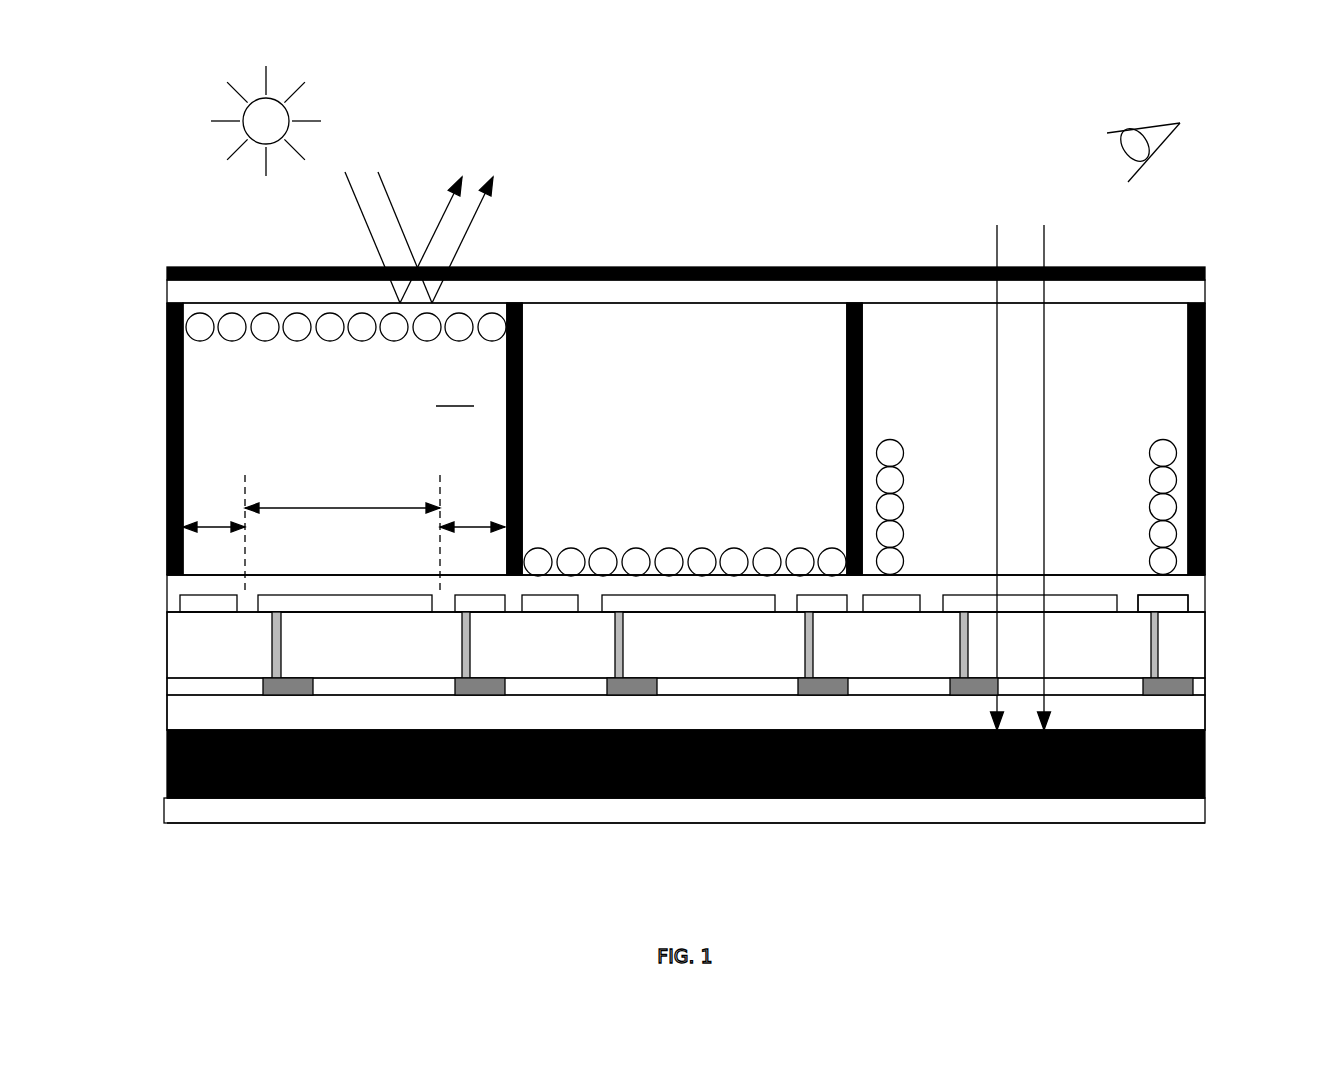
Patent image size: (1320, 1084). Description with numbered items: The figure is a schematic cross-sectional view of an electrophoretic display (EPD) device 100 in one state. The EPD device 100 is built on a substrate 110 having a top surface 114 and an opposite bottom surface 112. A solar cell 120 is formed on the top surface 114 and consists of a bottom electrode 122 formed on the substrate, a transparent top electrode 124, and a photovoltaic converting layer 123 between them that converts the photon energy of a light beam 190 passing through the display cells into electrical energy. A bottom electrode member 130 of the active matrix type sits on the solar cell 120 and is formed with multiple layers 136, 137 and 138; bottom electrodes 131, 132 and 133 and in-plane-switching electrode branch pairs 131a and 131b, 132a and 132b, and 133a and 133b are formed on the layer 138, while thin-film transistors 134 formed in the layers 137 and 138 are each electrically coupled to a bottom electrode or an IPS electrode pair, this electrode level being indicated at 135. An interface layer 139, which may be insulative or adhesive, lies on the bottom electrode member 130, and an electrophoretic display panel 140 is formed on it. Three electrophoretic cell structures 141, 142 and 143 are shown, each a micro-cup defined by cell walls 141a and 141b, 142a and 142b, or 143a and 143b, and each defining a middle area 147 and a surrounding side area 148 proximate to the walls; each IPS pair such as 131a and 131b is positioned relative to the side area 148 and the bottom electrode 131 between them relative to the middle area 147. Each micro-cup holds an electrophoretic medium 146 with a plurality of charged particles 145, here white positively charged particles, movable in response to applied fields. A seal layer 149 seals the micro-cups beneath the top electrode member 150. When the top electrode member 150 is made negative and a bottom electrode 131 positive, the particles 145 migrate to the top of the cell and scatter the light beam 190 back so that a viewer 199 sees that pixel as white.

The EPD device 100 is at (725, 87).
The substrate 110 is at (1177, 815).
The bottom surface 112 is at (930, 823).
The top surface 114 is at (990, 800).
The solar cell 120 is at (1215, 733).
The bottom electrode 122 is at (1053, 798).
The photovoltaic converting layer 123 is at (1087, 798).
The top electrode 124 is at (1125, 798).
The bottom electrode member 130 is at (1215, 612).
The bottom electrode 131 is at (380, 603).
The IPS electrode branch 131a is at (207, 603).
The IPS electrode branch 131b is at (482, 603).
The bottom electrode 132 is at (694, 603).
The IPS electrode branch 132a is at (550, 603).
The IPS electrode branch 132b is at (822, 603).
The bottom electrode 133 is at (1032, 603).
The IPS electrode branch 133a is at (893, 603).
The IPS electrode branch 133b is at (1165, 603).
The thin-film transistor 134 is at (288, 690).
The electrode layer 135 is at (1200, 603).
The layer 136 is at (200, 715).
The layer 137 is at (200, 687).
The layer 138 is at (203, 650).
The interface layer 139 is at (200, 587).
The electrophoretic display panel 140 is at (1215, 285).
The electrophoretic cell structure 141 is at (287, 433).
The cell wall 141a is at (185, 303).
The cell wall 141b is at (516, 303).
The electrophoretic cell structure 142 is at (627, 442).
The cell wall 142a is at (543, 384).
The cell wall 142b is at (855, 303).
The electrophoretic cell structure 143 is at (957, 417).
The cell wall 143a is at (883, 385).
The cell wall 143b is at (1192, 303).
The charged particles 145 is at (358, 335).
The electrophoretic medium 146 is at (436, 406).
The middle area 147 is at (342, 532).
The side area 148 is at (344, 513).
The seal layer 149 is at (200, 290).
The top electrode member 150 is at (1205, 273).
The light beam 190 is at (1044, 238).
The viewer 199 is at (1165, 144).